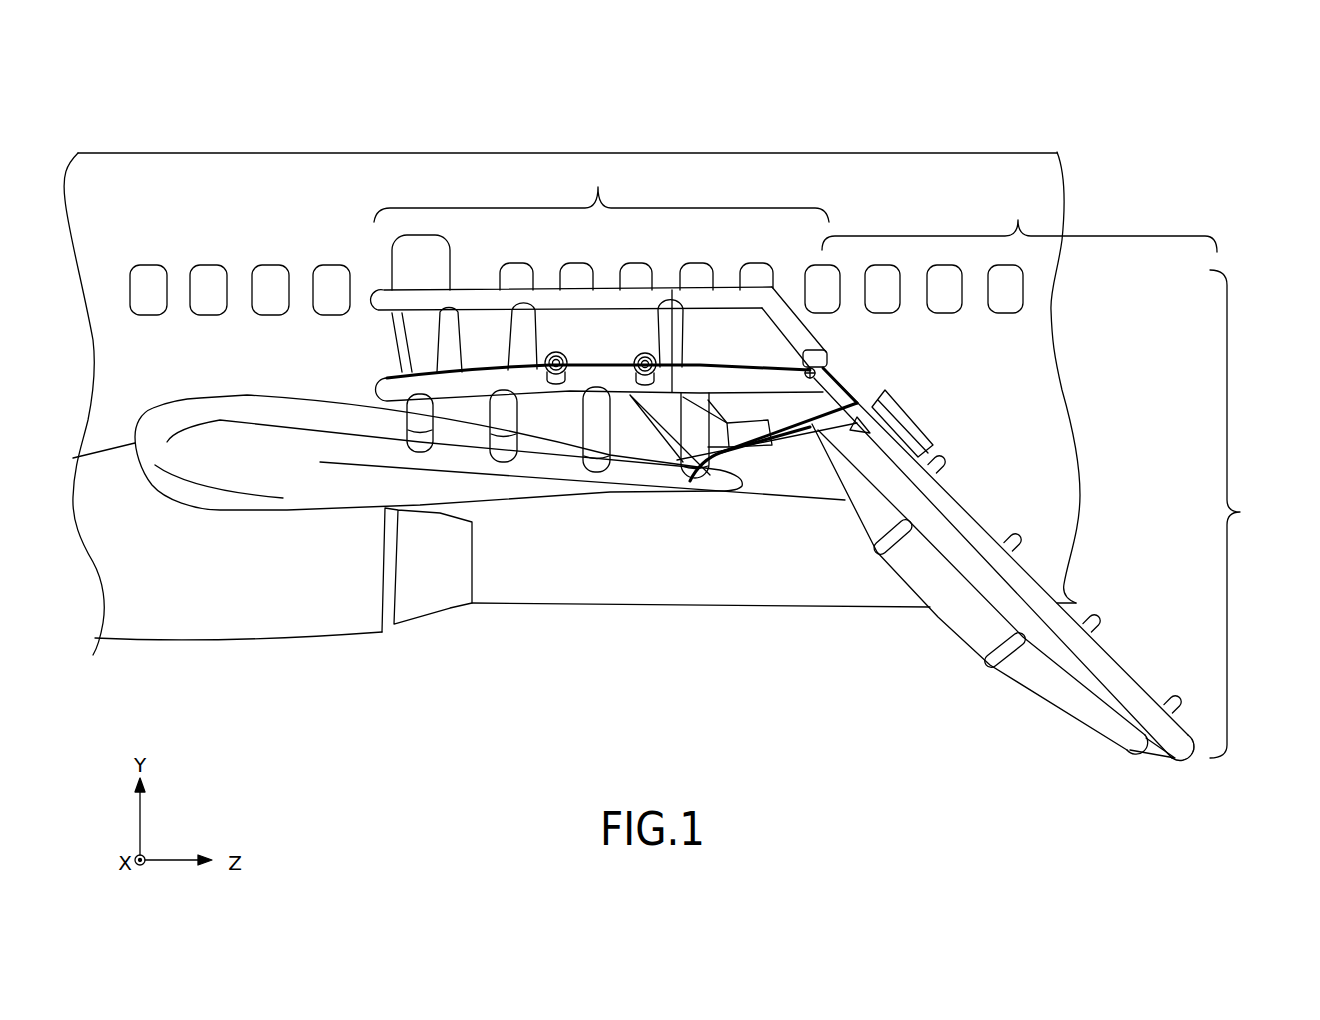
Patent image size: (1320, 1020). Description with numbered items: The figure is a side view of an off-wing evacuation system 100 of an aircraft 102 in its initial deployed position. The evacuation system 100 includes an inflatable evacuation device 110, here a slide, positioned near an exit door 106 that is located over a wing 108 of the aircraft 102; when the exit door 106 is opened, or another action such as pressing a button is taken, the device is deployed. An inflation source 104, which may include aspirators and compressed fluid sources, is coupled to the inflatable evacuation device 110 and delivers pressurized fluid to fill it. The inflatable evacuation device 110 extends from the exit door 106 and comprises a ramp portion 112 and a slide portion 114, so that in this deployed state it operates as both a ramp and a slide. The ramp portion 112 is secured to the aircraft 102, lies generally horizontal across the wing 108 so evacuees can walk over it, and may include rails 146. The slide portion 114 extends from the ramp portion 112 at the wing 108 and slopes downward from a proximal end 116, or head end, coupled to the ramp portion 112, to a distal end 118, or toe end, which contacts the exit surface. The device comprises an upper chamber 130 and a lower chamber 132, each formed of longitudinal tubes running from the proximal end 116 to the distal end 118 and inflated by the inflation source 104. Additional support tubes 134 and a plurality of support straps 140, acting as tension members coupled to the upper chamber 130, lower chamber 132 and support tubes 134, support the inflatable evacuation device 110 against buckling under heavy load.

The evacuation system 100 is at (1104, 130).
The aircraft 102 is at (224, 203).
The inflation source 104 is at (555, 382).
The exit door 106 is at (388, 275).
The wing 108 is at (312, 413).
The inflatable evacuation device 110 is at (1050, 547).
The ramp portion 112 is at (601, 275).
The slide portion 114 is at (1019, 219).
The proximal end 116 is at (850, 362).
The distal end 118 is at (1200, 778).
The upper chamber 130 is at (385, 390).
The lower chamber 132 is at (1082, 690).
The support tubes 134 is at (885, 553).
The support straps 140 is at (662, 452).
The rails 146 is at (605, 298).